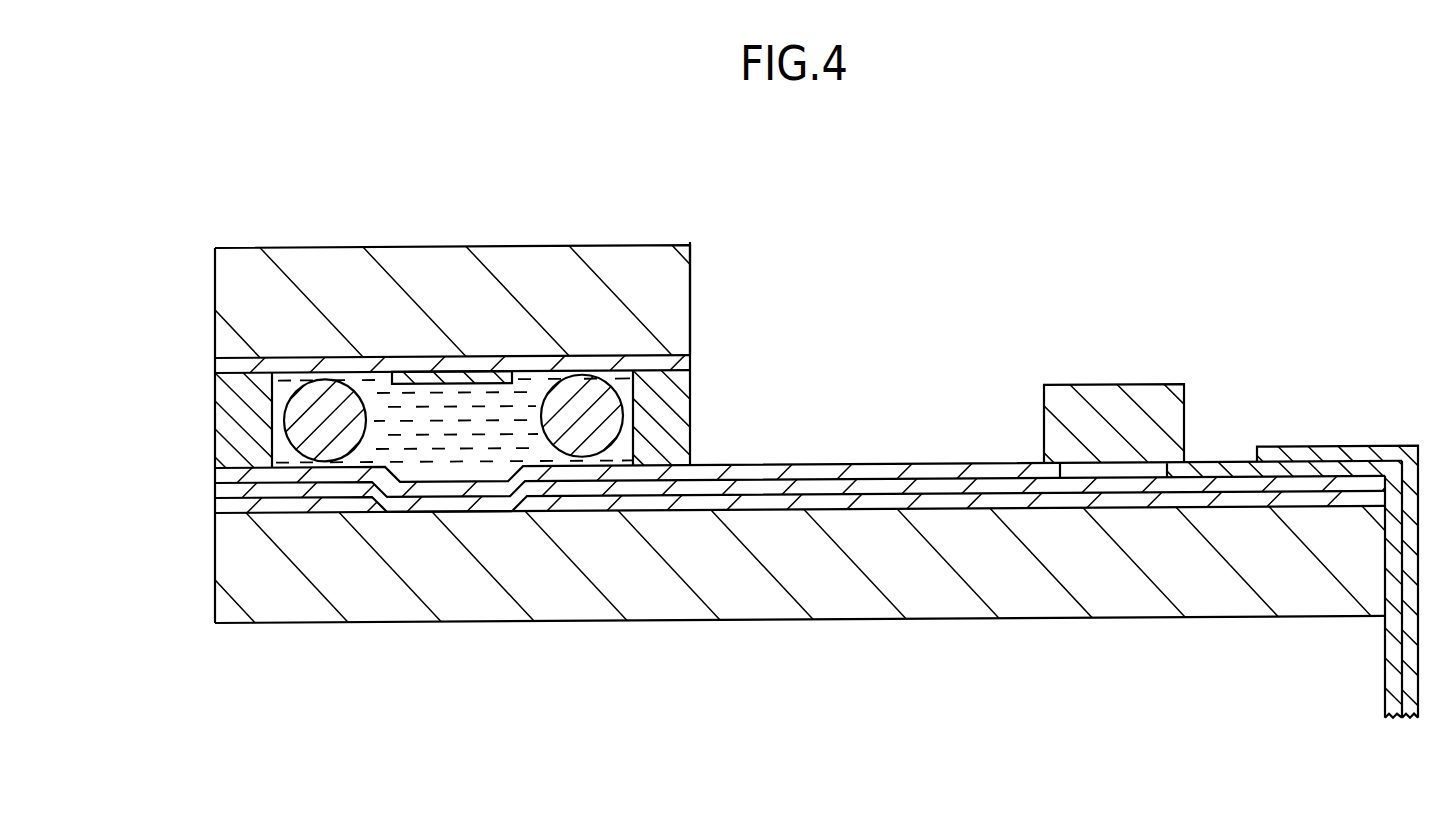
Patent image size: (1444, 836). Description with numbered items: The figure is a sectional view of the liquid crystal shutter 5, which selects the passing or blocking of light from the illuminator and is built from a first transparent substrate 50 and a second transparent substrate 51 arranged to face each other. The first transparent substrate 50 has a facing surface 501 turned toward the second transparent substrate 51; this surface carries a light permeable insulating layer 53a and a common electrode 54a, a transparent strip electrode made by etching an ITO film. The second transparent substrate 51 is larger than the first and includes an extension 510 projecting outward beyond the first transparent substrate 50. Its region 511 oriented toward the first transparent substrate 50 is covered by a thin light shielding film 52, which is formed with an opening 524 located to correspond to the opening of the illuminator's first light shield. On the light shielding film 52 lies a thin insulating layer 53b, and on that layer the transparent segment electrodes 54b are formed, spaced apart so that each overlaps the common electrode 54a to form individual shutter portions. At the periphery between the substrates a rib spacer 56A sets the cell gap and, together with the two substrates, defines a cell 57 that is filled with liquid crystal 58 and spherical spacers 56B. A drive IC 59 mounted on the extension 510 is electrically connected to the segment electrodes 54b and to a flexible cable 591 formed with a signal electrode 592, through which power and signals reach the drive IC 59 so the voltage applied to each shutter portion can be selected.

The liquid crystal shutter 5 is at (869, 282).
The first transparent substrate 50 is at (477, 264).
The facing surface 501 is at (633, 357).
The insulating layer 53a is at (667, 363).
The common electrode 54a is at (432, 372).
The rib spacer 56A is at (215, 397).
The spherical spacers 56B is at (603, 420).
The cell 57 is at (292, 375).
The liquid crystal 58 is at (525, 400).
The segment electrodes 54b is at (215, 480).
The insulating layer 53b is at (215, 493).
The light shielding film 52 is at (215, 508).
The region 511 is at (927, 510).
The opening 524 is at (406, 513).
The second transparent substrate 51 is at (707, 604).
The extension 510 is at (1052, 602).
The drive IC 59 is at (1125, 384).
The signal electrode 592 is at (1220, 466).
The flexible cable 591 is at (1378, 446).